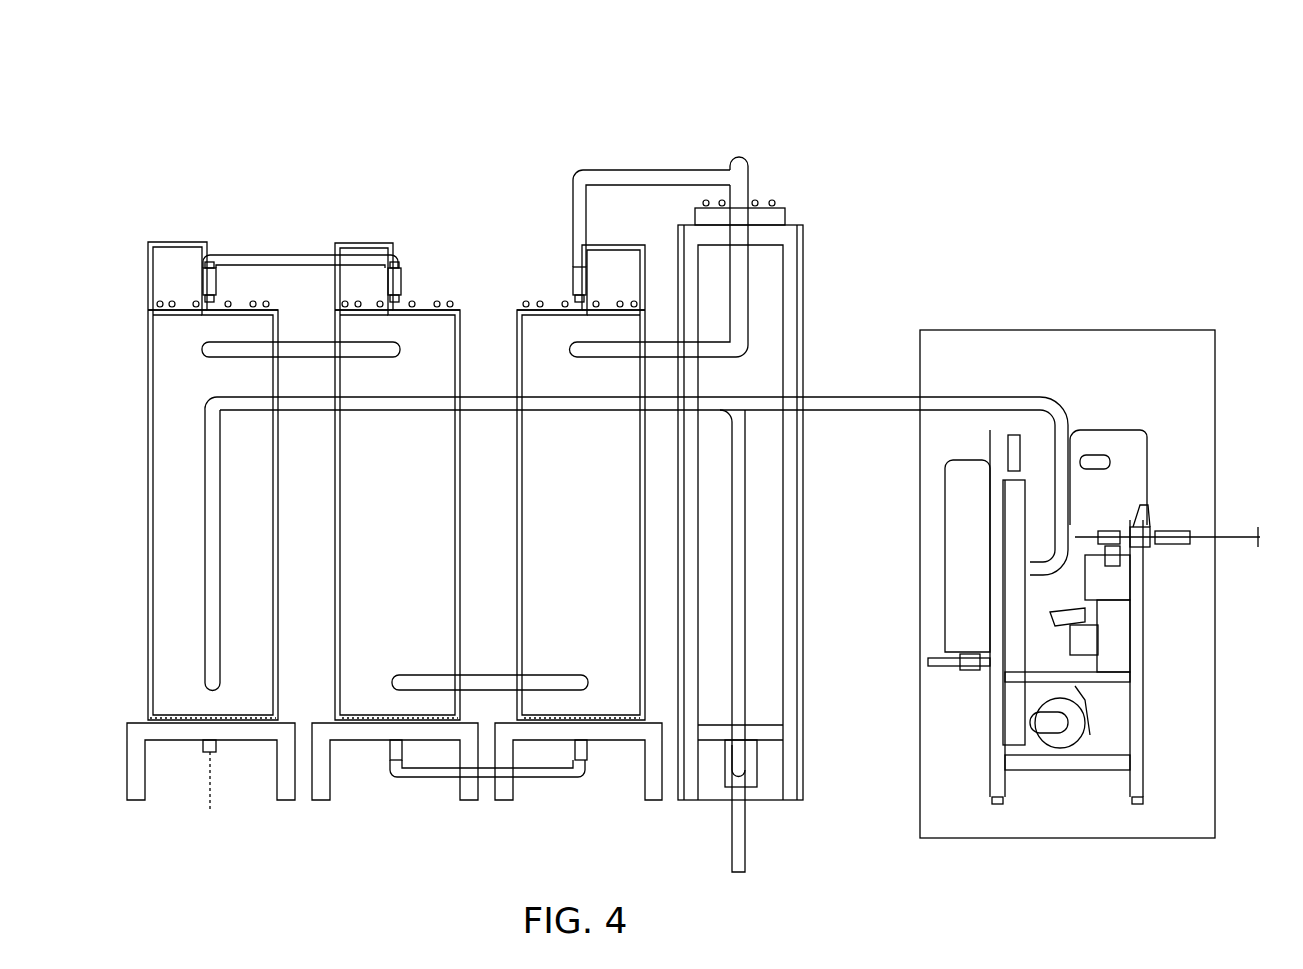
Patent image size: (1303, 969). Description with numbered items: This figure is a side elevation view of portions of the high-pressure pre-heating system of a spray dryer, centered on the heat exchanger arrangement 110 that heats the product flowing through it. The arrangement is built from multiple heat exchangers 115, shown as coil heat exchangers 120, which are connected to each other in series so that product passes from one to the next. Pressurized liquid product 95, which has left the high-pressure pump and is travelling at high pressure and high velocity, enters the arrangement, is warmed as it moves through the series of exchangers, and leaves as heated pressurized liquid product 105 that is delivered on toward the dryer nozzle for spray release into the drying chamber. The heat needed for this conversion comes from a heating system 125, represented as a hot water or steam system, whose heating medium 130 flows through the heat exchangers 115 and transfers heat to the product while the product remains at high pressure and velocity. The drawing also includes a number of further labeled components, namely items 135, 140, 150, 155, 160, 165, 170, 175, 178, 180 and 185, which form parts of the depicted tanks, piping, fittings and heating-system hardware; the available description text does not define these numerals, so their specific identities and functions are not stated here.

The pressurized liquid product 95 is at (752, 846).
The heated pressurized liquid product 105 is at (588, 185).
The heat exchanger arrangement 110 is at (510, 53).
The heat exchangers 115 is at (735, 127).
The coil heat exchangers 120 is at (718, 498).
The heating system 125 is at (1191, 328).
The heating medium 130 is at (843, 396).
The pump assembly 135 is at (1162, 755).
The outlet line 140 is at (1230, 518).
The supply line 150 is at (987, 394).
The valve 155 is at (203, 285).
The conduit 160 is at (305, 252).
The lid 165 is at (176, 292).
The fastener 170 is at (380, 297).
The return line 175 is at (887, 410).
The tube 178 is at (203, 360).
The pipe 180 is at (758, 152).
The pipe outlet 185 is at (176, 350).